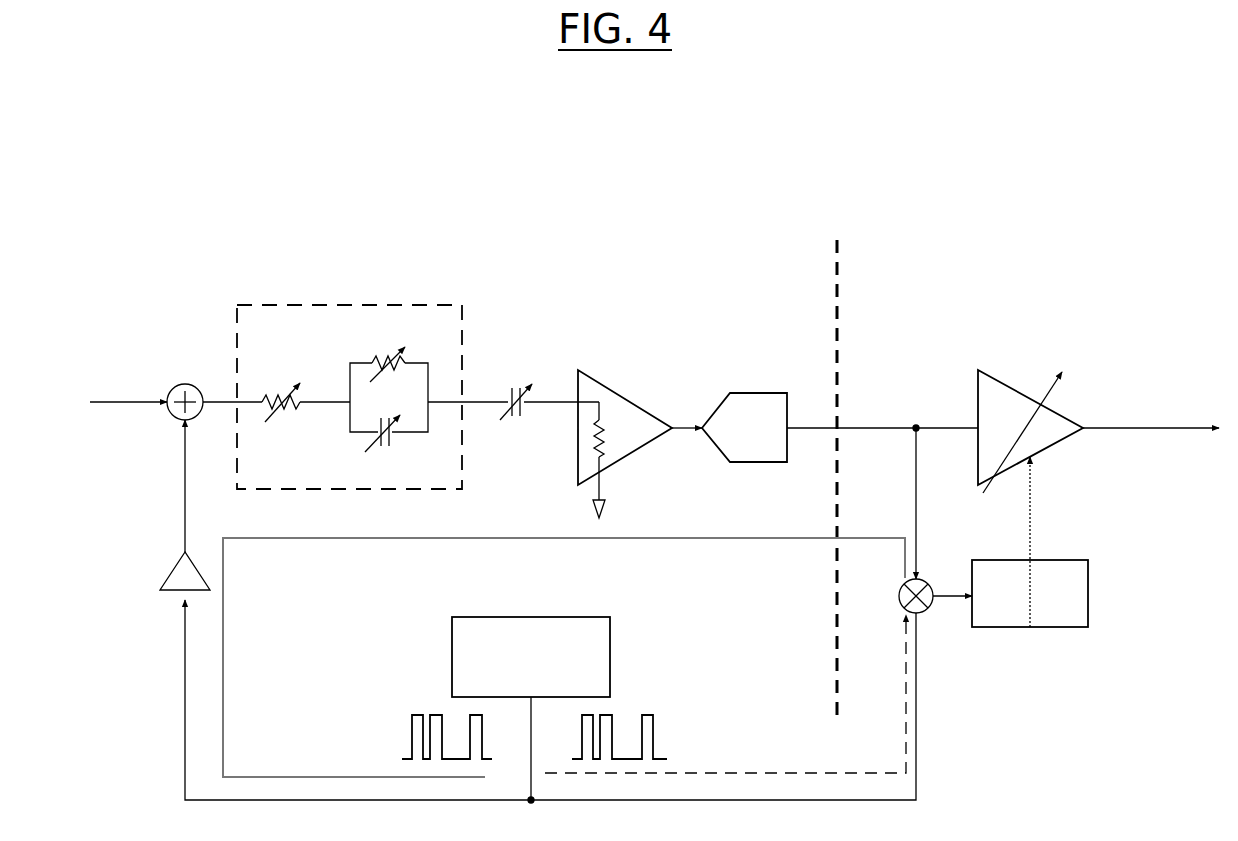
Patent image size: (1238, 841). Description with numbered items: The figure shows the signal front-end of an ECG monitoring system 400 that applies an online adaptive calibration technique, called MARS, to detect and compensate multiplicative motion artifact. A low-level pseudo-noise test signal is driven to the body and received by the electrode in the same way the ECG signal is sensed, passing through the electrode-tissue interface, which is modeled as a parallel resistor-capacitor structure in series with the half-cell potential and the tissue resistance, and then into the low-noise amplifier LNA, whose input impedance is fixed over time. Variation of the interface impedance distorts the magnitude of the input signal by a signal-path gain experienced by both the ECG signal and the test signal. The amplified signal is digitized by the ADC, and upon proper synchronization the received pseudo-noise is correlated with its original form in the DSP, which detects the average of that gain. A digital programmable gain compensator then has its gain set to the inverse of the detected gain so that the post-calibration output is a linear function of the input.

The ECG monitoring system 400 is at (277, 123).
The low-noise amplifier LNA is at (634, 444).
The analog-to-digital converter ADC is at (744, 427).
The digital signal processor DSP is at (1030, 593).